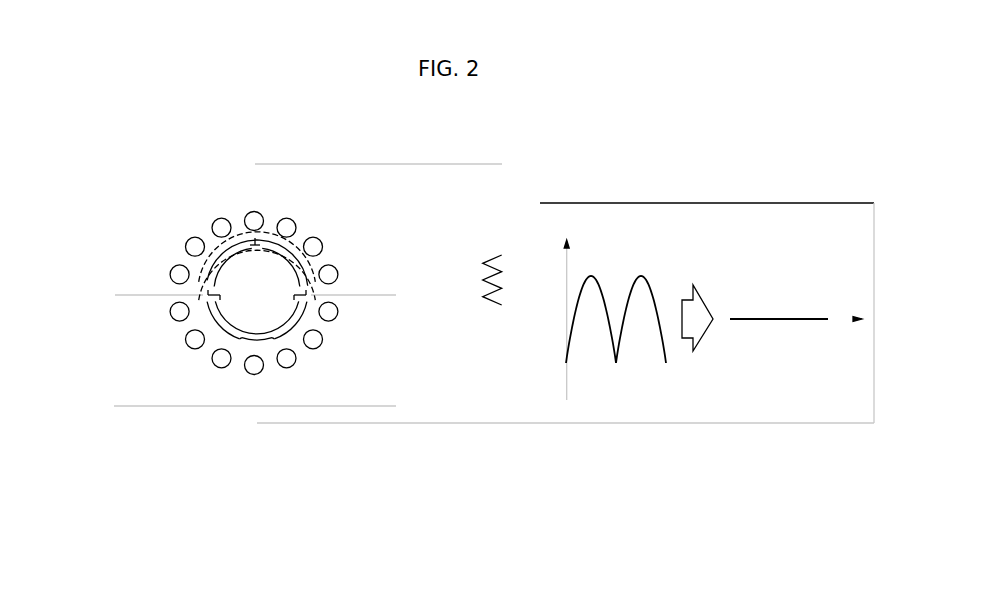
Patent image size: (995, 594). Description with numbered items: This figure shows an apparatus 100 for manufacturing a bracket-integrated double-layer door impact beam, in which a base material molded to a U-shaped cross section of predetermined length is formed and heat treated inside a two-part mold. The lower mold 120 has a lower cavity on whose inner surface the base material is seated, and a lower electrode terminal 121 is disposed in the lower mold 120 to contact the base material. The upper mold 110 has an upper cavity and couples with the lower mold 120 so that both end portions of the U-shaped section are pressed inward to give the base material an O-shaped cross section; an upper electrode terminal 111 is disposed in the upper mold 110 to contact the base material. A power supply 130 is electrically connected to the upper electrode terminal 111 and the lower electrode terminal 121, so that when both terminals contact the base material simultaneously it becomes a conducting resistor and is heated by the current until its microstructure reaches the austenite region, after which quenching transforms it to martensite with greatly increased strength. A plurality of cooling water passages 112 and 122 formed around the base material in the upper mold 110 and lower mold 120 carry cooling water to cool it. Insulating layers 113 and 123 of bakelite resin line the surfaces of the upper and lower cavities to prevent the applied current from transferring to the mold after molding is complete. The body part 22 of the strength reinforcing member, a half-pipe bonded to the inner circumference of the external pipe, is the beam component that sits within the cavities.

The energy generating device 100 is at (522, 547).
The upper mold 110 is at (125, 232).
The upper electrode terminal 111 is at (256, 231).
The cooling water passages 112 is at (195, 238).
The insulating layer 113 is at (243, 238).
The body part 22 is at (220, 302).
The lower mold 120 is at (138, 370).
The lower electrode terminal 121 is at (270, 350).
The cooling water passages 122 is at (223, 363).
The insulating layer 123 is at (215, 335).
The rectifier circuit 130 is at (709, 430).